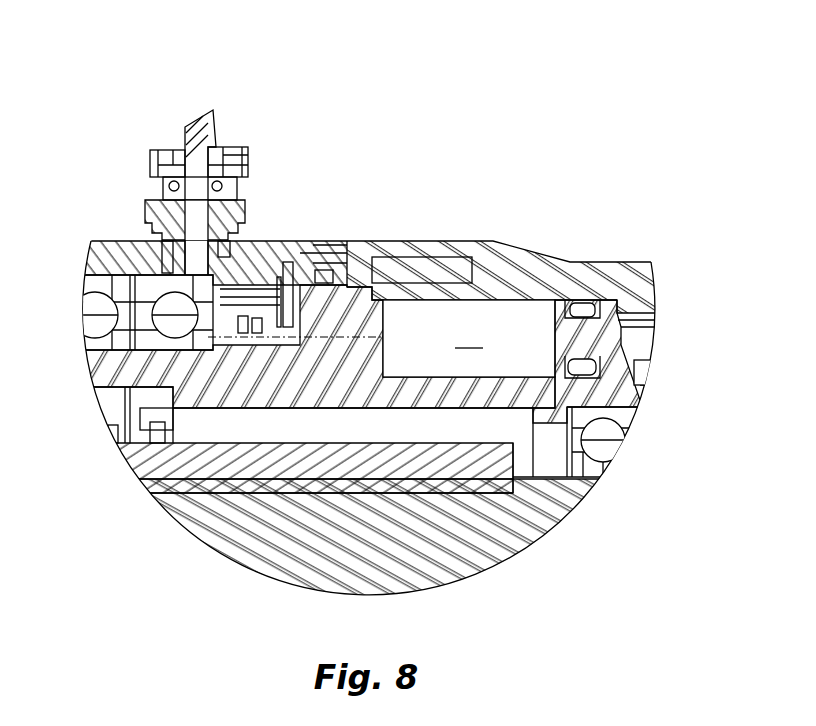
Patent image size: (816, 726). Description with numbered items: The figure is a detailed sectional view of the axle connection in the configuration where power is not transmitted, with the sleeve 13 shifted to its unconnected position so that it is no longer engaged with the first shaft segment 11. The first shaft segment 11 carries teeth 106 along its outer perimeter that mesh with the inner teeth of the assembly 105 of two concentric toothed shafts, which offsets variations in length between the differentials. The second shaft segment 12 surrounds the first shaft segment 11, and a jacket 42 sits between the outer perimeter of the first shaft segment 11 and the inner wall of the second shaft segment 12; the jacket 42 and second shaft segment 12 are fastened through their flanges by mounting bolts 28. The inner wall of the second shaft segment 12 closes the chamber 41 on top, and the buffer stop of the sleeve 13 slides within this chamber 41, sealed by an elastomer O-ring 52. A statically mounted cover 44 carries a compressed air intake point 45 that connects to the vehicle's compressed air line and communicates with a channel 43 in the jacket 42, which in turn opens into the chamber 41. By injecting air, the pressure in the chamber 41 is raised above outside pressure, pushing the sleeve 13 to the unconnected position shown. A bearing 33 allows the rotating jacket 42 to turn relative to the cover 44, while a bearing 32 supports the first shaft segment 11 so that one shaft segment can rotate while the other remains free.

The first shaft segment 11 is at (218, 538).
The second shaft segment 12 is at (642, 279).
The sleeve 13 is at (645, 344).
The mounting bolts 28 is at (458, 257).
The bearing 32 is at (622, 417).
The bearing 33 is at (97, 288).
The chamber 41 is at (469, 338).
The jacket 42 is at (100, 365).
The channel 43 is at (310, 330).
The cover 44 is at (123, 247).
The compressed air intake point 45 is at (184, 124).
The O-ring 52 is at (586, 305).
The assembly of two concentric toothed shafts 105 is at (128, 458).
The teeth 106 is at (150, 482).